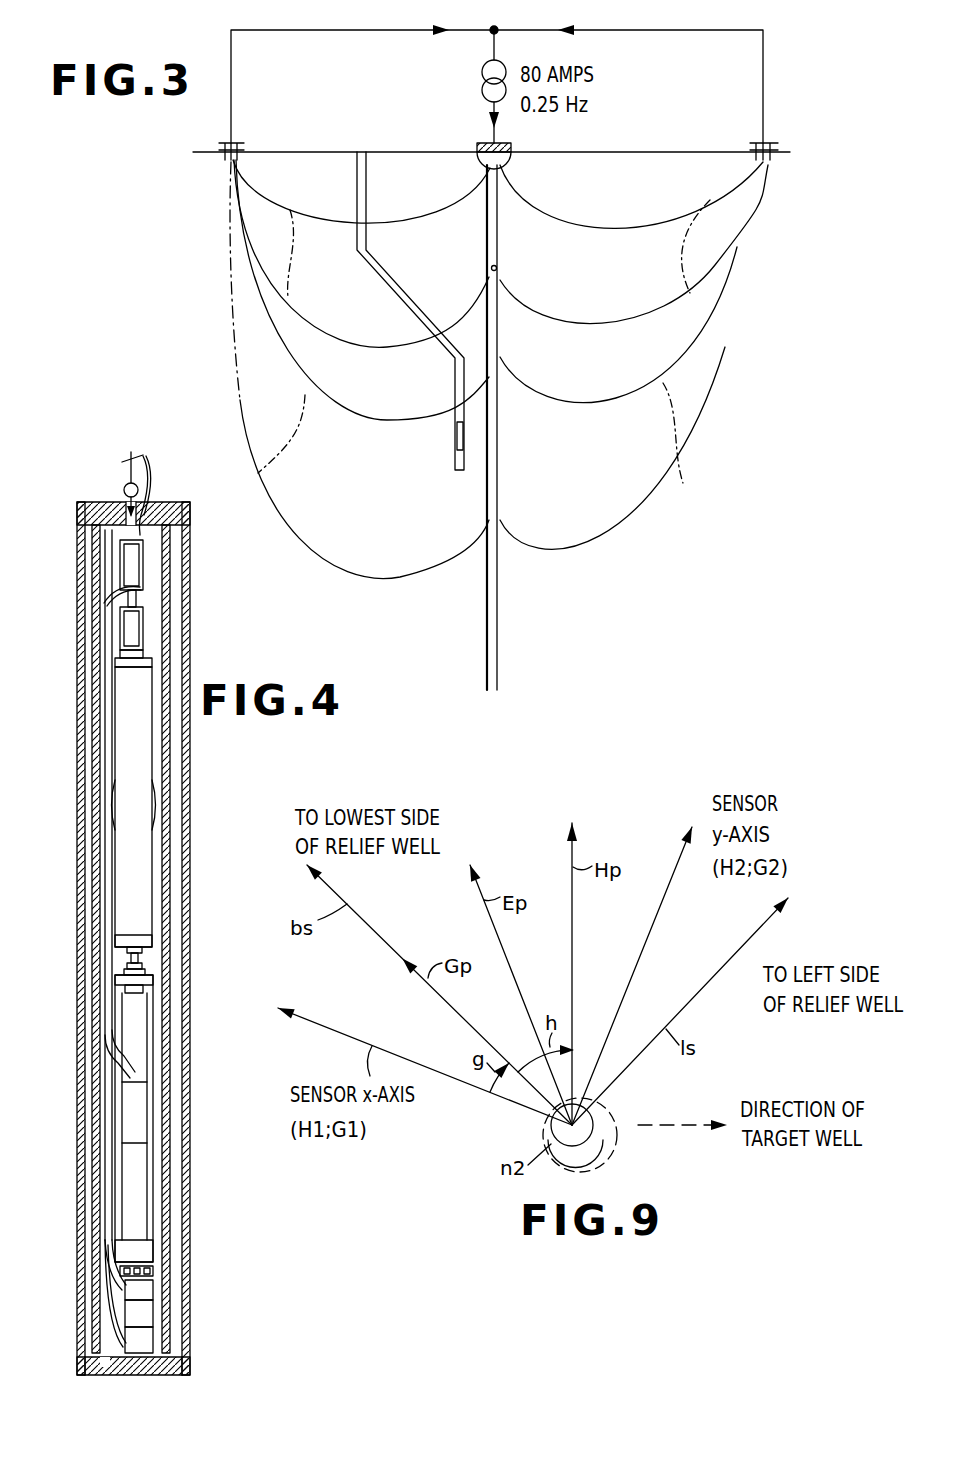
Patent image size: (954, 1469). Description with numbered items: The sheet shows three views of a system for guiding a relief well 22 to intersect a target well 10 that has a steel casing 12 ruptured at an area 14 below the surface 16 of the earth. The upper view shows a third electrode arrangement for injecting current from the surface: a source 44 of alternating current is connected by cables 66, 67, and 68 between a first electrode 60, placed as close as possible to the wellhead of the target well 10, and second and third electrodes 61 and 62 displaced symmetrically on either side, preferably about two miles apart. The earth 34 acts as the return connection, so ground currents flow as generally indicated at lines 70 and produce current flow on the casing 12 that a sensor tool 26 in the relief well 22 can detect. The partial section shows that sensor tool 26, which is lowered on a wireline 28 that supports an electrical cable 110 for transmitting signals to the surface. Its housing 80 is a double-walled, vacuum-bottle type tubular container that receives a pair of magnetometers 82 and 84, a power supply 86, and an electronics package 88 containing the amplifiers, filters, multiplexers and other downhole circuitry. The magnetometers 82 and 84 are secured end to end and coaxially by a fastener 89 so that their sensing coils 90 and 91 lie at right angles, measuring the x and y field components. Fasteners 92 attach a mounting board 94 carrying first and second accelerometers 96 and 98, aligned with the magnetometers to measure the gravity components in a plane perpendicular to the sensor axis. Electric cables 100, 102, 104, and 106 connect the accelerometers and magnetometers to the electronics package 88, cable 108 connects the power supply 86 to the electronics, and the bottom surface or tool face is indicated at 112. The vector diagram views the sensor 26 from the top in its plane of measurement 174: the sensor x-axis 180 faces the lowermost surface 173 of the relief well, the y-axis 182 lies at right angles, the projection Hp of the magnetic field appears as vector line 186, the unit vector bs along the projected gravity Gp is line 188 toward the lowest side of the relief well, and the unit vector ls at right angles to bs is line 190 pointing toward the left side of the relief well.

In FIG. 3, the target well 10 is at (506, 248).
In FIG. 3, the steel casing 12 is at (498, 272).
In FIG. 3, the rupture area 14 is at (487, 235).
In FIG. 3, the surface of the earth 16 is at (294, 152).
In FIG. 3, the relief well 22 is at (366, 192).
In FIG. 9, the relief well 22 is at (613, 1104).
In FIG. 3, the sensor tool 26 is at (457, 440).
In FIG. 4, the sensor tool 26 is at (200, 590).
In FIG. 9, the sensor tool 26 is at (611, 1148).
In FIG. 4, the wireline 28 is at (128, 462).
In FIG. 3, the earth 34 is at (442, 270).
In FIG. 3, the source of alternating current 44 is at (485, 79).
In FIG. 3, the first electrode 60 is at (480, 145).
In FIG. 3, the second electrode 61 is at (224, 145).
In FIG. 3, the third electrode 62 is at (757, 143).
In FIG. 3, the cable 66 is at (318, 30).
In FIG. 3, the cable 67 is at (499, 108).
In FIG. 3, the cable 68 is at (677, 30).
In FIG. 3, the ground current lines 70 is at (298, 249).
In FIG. 4, the housing 80 is at (190, 738).
In FIG. 4, the magnetometer 82 is at (140, 852).
In FIG. 4, the magnetometer 84 is at (165, 1028).
In FIG. 4, the power supply 86 is at (140, 635).
In FIG. 4, the electronics package 88 is at (125, 578).
In FIG. 4, the fastener 89 is at (141, 963).
In FIG. 4, the sensing coil 90 is at (153, 807).
In FIG. 4, the sensing coil 91 is at (138, 1113).
In FIG. 4, the fasteners 92 is at (130, 1266).
In FIG. 4, the mounting board 94 is at (140, 1285).
In FIG. 4, the first accelerometer 96 is at (146, 1308).
In FIG. 4, the second accelerometer 98 is at (147, 1343).
In FIG. 4, the electric cable 100 is at (128, 1330).
In FIG. 4, the electric cable 102 is at (115, 1278).
In FIG. 4, the electric cable 104 is at (125, 1068).
In FIG. 4, the electric cable 106 is at (103, 752).
In FIG. 4, the cable 108 is at (120, 597).
In FIG. 4, the electrical cable 110 is at (156, 468).
In FIG. 4, the tool face 112 is at (175, 1376).
In FIG. 9, the lowermost surface of the relief well 173 is at (551, 1120).
In FIG. 9, the plane of measurement 174 is at (773, 1070).
In FIG. 9, the x-axis vector 180 is at (443, 1075).
In FIG. 9, the y-axis vector 182 is at (680, 860).
In FIG. 9, the vector line Hp 186 is at (573, 939).
In FIG. 9, the vector bs 188 is at (366, 921).
In FIG. 9, the vector ls 190 is at (758, 968).